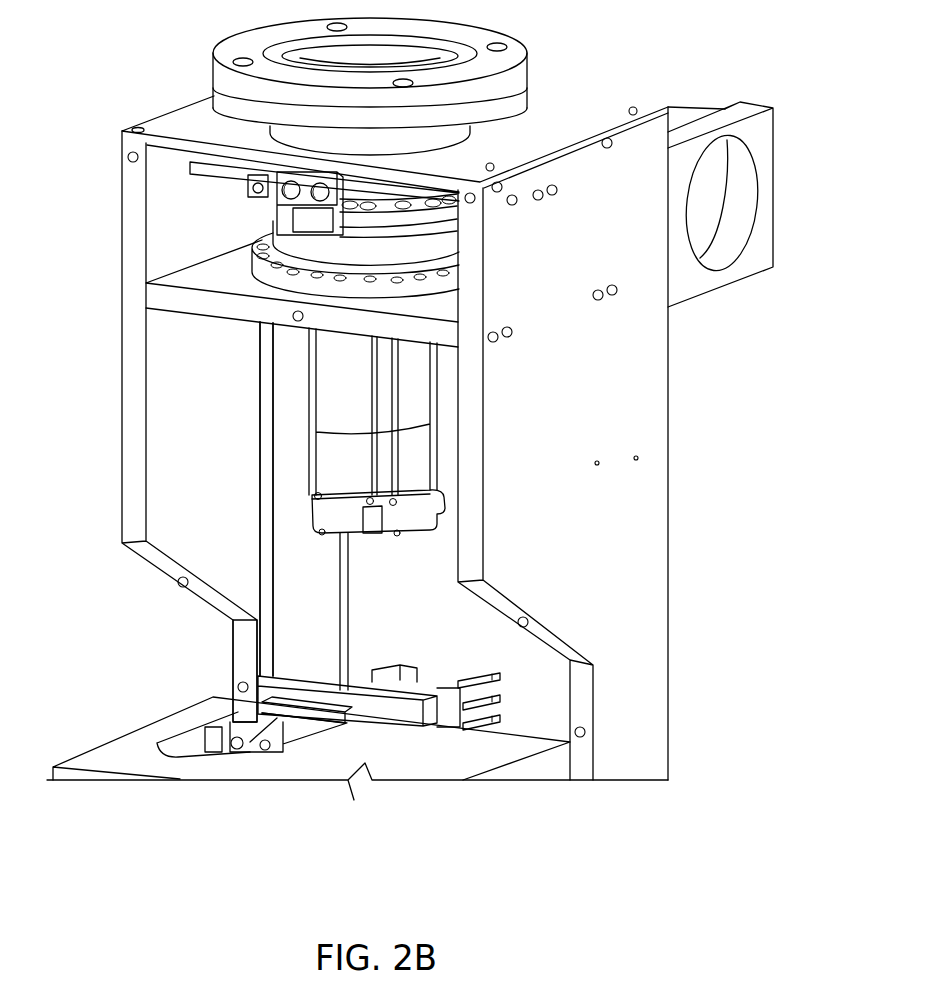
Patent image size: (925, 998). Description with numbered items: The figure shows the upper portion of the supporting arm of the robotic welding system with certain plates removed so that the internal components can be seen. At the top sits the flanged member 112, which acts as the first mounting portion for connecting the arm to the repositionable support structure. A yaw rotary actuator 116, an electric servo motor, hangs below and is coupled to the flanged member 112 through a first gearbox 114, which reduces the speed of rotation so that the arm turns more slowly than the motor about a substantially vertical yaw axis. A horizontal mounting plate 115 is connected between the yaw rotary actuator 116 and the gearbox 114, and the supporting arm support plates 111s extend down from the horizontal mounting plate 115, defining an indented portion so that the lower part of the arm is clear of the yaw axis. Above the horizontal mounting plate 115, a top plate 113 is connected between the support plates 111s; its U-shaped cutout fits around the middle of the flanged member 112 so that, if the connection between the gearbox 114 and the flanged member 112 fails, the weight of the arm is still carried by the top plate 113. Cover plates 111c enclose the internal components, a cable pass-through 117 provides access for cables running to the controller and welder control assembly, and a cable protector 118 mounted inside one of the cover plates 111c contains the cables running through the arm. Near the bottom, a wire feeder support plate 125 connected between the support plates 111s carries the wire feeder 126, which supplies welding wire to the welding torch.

The cover plate 111c is at (603, 108).
The supporting arm support plate 111s is at (135, 362).
The flanged member 112 is at (212, 80).
The top plate 113 is at (148, 148).
The first gearbox 114 is at (262, 234).
The horizontal mounting plate 115 is at (165, 297).
The yaw rotary actuator 116 is at (342, 384).
The cable pass-through 117 is at (712, 200).
The cable protector 118 is at (444, 712).
The wire feeder support plate 125 is at (270, 692).
The wire feeder 126 is at (106, 760).